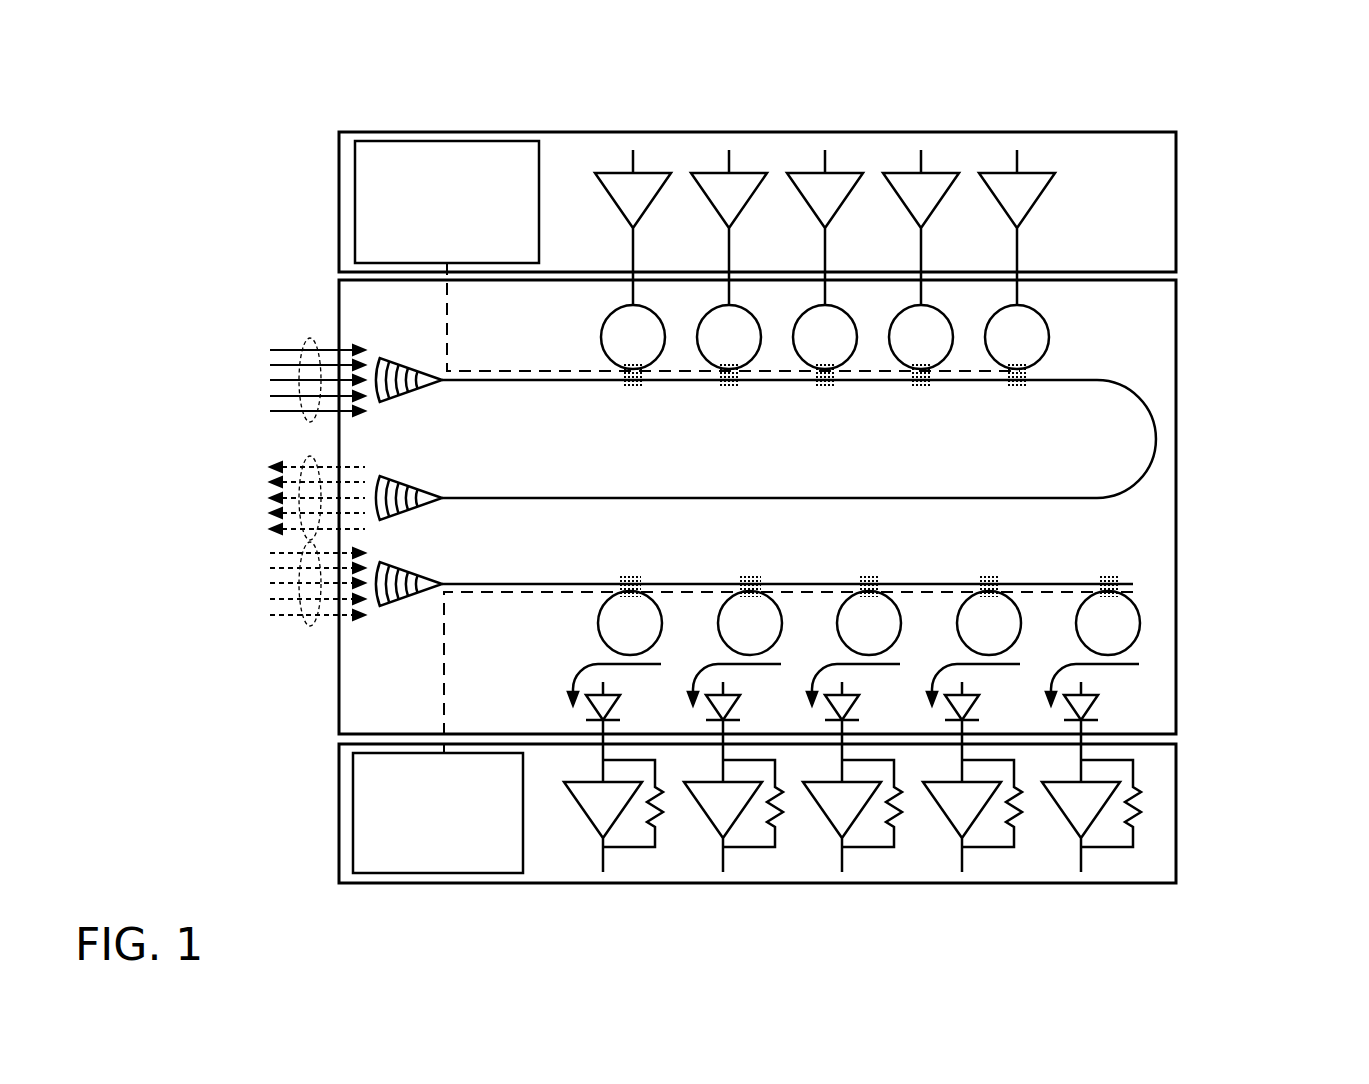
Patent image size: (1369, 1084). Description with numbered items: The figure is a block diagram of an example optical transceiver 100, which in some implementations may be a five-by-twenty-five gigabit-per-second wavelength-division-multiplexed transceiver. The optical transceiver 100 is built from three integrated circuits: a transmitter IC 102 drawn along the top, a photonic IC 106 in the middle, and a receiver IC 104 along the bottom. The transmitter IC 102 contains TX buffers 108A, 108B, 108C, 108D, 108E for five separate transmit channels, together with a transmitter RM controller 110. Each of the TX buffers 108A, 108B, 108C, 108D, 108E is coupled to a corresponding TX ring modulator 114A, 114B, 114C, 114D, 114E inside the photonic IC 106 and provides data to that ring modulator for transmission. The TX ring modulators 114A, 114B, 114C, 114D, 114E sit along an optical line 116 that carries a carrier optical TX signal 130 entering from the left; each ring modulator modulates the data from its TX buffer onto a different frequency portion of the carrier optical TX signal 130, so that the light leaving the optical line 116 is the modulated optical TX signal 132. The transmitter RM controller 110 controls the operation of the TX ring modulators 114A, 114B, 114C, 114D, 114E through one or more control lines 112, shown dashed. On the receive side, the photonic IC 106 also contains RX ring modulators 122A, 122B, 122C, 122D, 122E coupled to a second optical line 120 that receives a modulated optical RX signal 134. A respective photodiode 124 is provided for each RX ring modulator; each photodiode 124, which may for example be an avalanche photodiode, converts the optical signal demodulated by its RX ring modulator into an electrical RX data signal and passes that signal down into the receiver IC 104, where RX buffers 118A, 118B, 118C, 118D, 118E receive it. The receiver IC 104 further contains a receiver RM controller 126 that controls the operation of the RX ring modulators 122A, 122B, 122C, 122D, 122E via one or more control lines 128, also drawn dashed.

The optical transceiver 100 is at (141, 95).
The transmitter integrated circuit 102 is at (1176, 202).
The receiver IC 104 is at (1177, 812).
The photonic IC 106 is at (1176, 517).
The TX buffer 108A is at (640, 173).
The TX buffer 108B is at (736, 173).
The TX buffer 108C is at (832, 173).
The TX buffer 108D is at (928, 173).
The TX buffer 108E is at (1024, 173).
The transmitter RM controller 110 is at (447, 202).
The control lines 112 is at (460, 372).
The TX ring modulator 114A is at (666, 337).
The TX ring modulator 114B is at (762, 337).
The TX ring modulator 114C is at (858, 337).
The TX ring modulator 114D is at (954, 337).
The TX ring modulator 114E is at (1050, 337).
The optical line 116 is at (559, 381).
The RX buffer 118A is at (574, 822).
The RX buffer 118B is at (694, 822).
The RX buffer 118C is at (813, 822).
The RX buffer 118D is at (933, 822).
The RX buffer 118E is at (1052, 822).
The optical line 120 is at (559, 583).
The RX ring modulator 122A is at (662, 623).
The RX ring modulator 122B is at (782, 623).
The RX ring modulator 122C is at (901, 623).
The RX ring modulator 122D is at (1021, 623).
The RX ring modulator 122E is at (1140, 623).
The photodiode 124 is at (1125, 708).
The receiver RM controller 126 is at (438, 813).
The control lines 128 is at (443, 711).
The carrier optical TX signal 130 is at (312, 340).
The modulated optical TX signal 132 is at (312, 458).
The modulated optical RX signal 134 is at (312, 626).